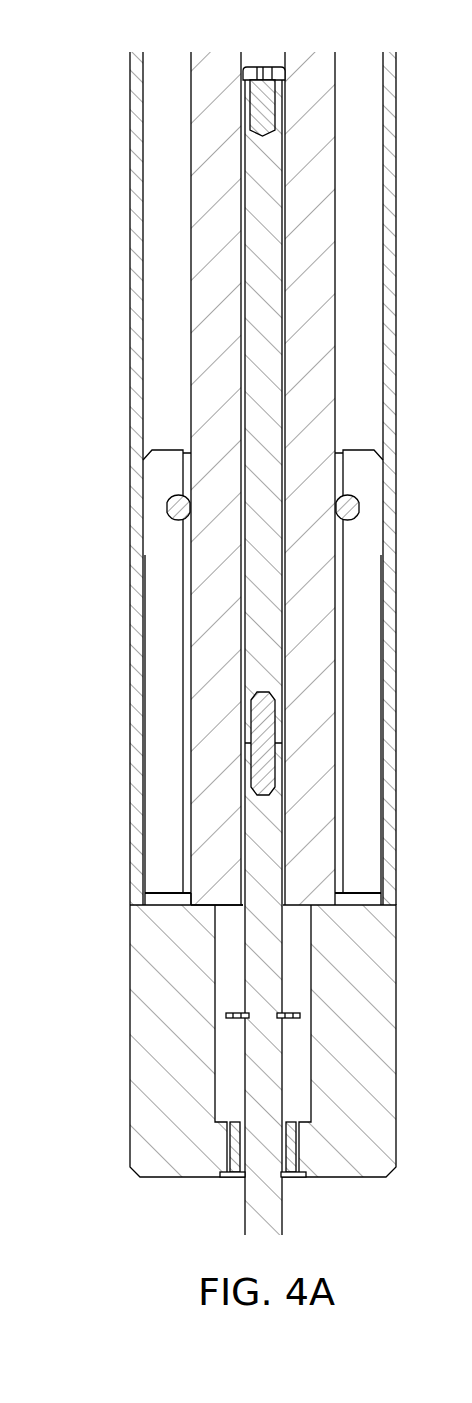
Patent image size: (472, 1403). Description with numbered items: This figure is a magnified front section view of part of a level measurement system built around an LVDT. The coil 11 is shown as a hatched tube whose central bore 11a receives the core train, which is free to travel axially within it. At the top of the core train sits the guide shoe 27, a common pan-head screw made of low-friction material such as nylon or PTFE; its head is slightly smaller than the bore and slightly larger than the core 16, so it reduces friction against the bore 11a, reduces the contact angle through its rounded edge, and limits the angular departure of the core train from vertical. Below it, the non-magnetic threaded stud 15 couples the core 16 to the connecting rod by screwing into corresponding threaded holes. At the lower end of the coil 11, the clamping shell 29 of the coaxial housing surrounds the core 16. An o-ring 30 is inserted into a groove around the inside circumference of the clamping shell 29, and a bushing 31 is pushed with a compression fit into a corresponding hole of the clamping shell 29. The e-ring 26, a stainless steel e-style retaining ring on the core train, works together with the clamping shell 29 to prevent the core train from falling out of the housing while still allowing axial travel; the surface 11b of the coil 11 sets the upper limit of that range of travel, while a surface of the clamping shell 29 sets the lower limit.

The coil 11 is at (195, 405).
The bore 11a is at (243, 312).
The surface of coil 11b is at (227, 906).
The non-magnetic threaded stud 15 is at (258, 725).
The core 16 is at (250, 202).
The e-ring 26 is at (226, 1015).
The guide shoe 27 is at (256, 102).
The clamping shell 29 is at (137, 1074).
The o-ring 30 is at (167, 507).
The bushing 31 is at (230, 1149).